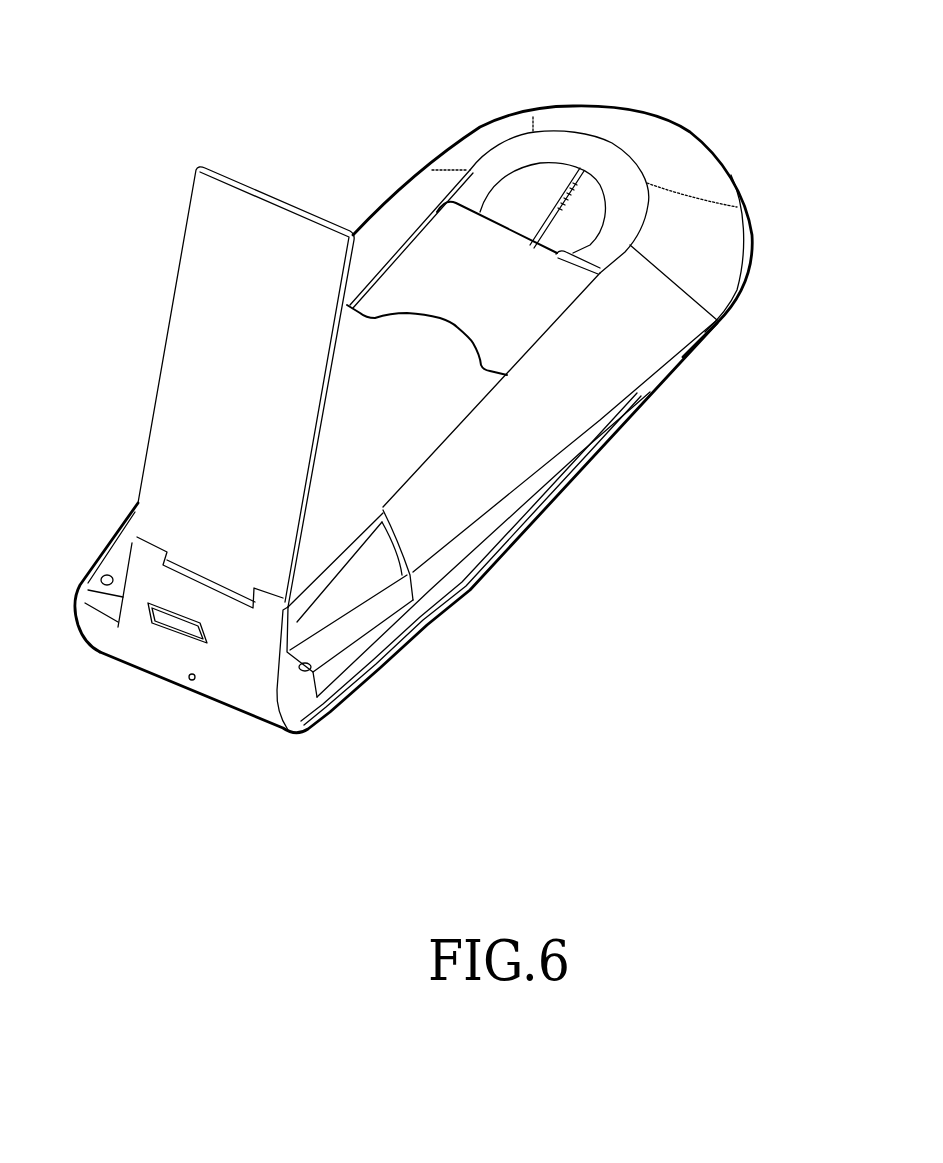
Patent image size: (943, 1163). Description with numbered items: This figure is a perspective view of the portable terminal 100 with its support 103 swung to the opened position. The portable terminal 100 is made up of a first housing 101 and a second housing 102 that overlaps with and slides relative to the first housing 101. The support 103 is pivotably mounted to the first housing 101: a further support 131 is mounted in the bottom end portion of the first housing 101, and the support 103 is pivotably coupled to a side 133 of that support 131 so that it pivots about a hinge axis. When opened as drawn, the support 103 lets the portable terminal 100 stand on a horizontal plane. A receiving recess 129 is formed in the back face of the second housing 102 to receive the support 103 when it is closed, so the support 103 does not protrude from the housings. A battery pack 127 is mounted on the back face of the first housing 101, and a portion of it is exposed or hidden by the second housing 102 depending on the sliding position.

The portable terminal 100 is at (356, 40).
The first housing 101 is at (357, 707).
The second housing 102 is at (692, 130).
The support 103 is at (190, 308).
The battery pack 127 is at (383, 450).
The receiving recess 129 is at (507, 310).
The support 131 is at (235, 682).
The side 133 is at (183, 593).